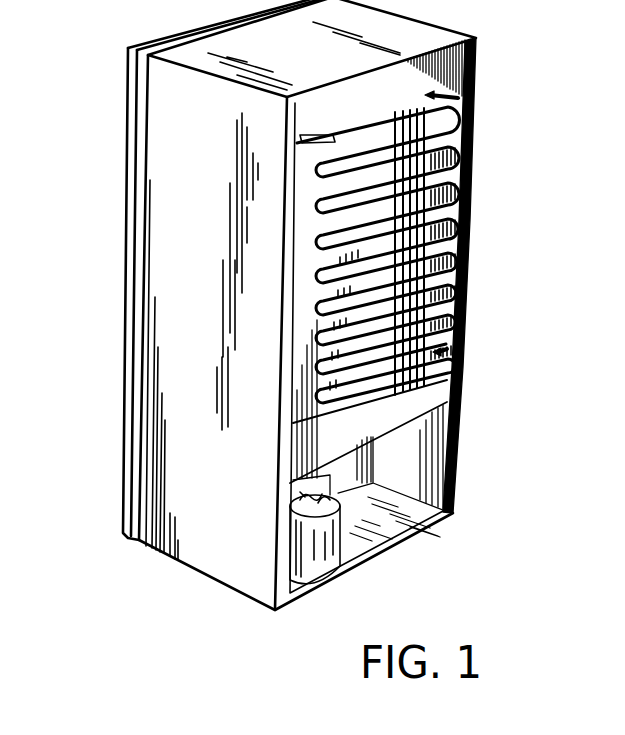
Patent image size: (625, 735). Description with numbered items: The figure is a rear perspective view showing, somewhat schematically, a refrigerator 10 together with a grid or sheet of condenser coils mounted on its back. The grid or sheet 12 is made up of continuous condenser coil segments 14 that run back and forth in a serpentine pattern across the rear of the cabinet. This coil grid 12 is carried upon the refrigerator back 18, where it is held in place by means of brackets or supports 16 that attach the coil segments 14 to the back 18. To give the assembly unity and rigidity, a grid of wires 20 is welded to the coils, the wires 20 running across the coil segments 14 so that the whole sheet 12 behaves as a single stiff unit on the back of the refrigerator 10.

The refrigerator 10 is at (168, 250).
The grid or sheet of condenser coils 12 is at (470, 137).
The continuous condenser coil segments 14 is at (467, 278).
The brackets or supports 16 is at (478, 76).
The refrigerator back 18 is at (465, 223).
The grid of wires 20 is at (470, 185).